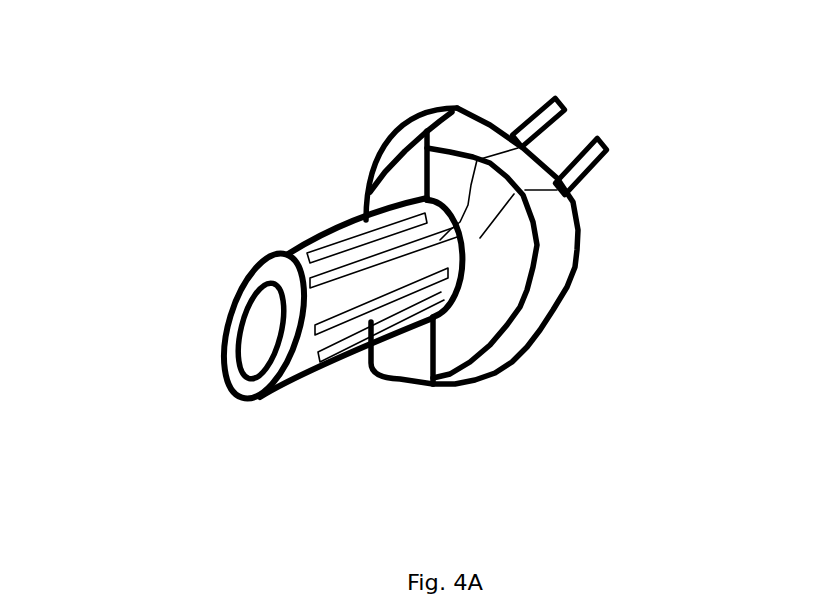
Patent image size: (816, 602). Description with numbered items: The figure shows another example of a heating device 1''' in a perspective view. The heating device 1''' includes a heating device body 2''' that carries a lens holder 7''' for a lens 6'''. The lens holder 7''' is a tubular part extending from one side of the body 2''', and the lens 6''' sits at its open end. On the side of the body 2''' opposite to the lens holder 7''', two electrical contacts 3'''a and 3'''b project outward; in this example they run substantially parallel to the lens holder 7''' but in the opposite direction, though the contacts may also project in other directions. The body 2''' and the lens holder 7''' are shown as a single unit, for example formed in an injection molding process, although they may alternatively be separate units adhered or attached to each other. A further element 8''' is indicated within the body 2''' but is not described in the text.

The heating device 1''' is at (396, 246).
The heating device body 2''' is at (503, 277).
The electrical contact 3'''a is at (584, 85).
The electrical contact 3'''b is at (626, 133).
The lens 6''' is at (181, 386).
The lens holder 7''' is at (336, 362).
The contact element 8''' is at (581, 231).